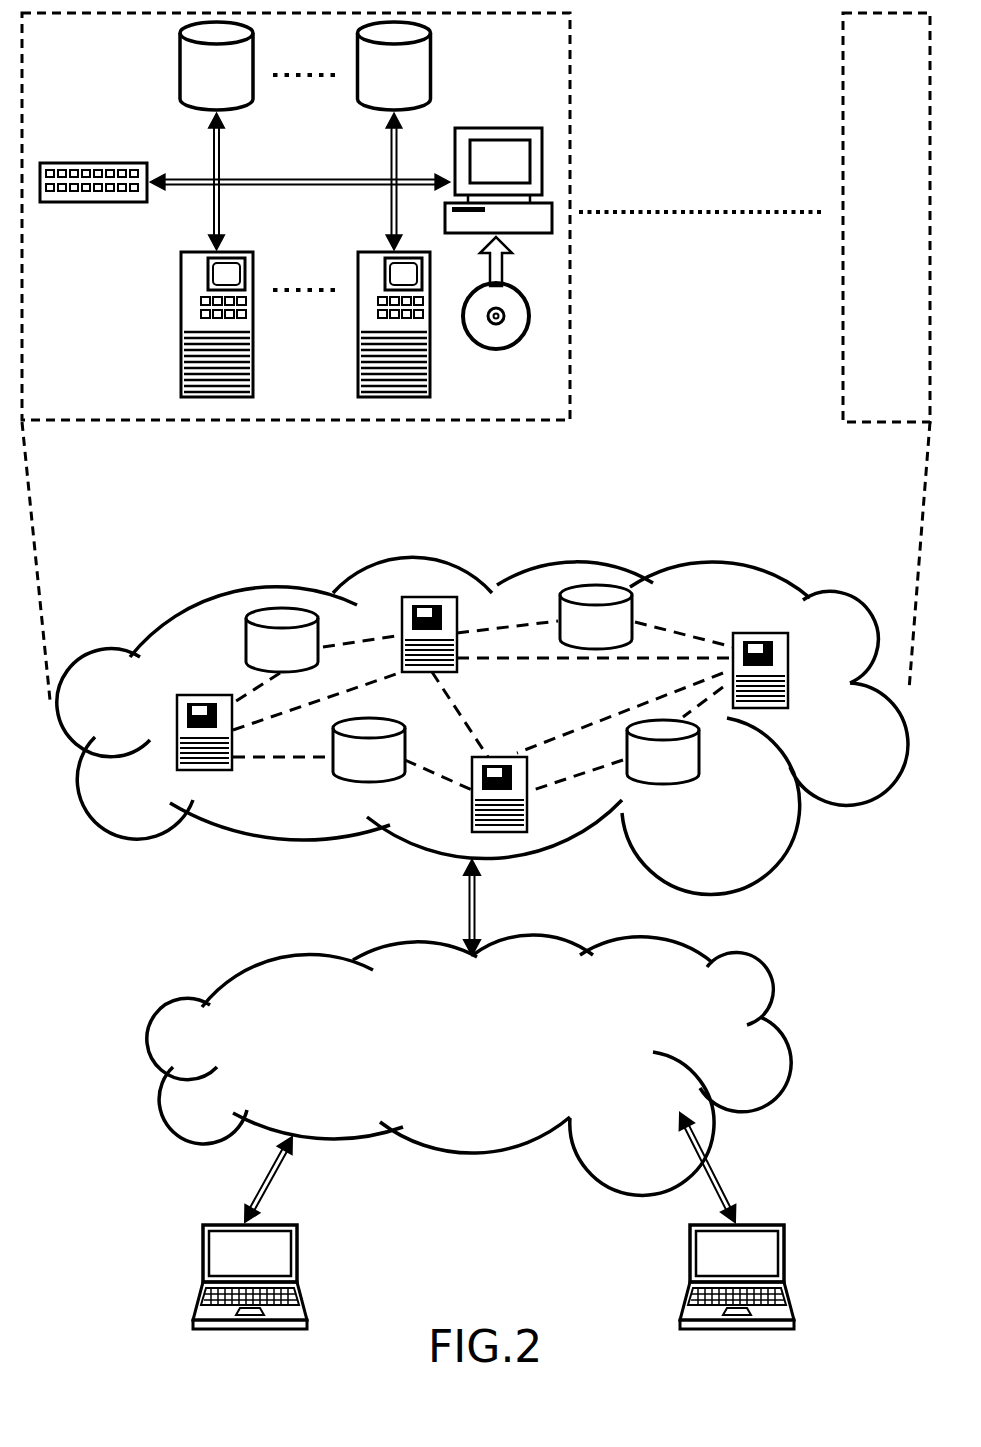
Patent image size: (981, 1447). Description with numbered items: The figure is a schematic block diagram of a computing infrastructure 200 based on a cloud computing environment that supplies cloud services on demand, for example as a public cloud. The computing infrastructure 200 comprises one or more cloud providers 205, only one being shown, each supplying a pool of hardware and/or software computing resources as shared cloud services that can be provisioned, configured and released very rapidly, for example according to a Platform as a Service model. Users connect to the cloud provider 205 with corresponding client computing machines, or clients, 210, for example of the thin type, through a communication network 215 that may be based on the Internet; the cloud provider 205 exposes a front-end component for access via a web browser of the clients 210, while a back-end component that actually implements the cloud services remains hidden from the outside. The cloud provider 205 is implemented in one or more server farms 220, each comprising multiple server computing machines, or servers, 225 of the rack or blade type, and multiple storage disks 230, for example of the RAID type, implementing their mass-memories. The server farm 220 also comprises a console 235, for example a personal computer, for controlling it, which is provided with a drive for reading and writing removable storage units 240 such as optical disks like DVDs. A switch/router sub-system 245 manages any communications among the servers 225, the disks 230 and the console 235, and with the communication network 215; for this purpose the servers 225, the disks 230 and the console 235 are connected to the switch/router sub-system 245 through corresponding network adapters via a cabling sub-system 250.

The computing infrastructure 200 is at (67, 938).
The cloud provider 205 is at (482, 714).
The client computing machine 210 is at (446, 1271).
The communication network 215 is at (469, 1044).
The server farm 220 is at (476, 356).
The server computing machine 225 is at (260, 329).
The storage disk 230 is at (258, 78).
The console 235 is at (500, 153).
The removable storage unit 240 is at (514, 320).
The switch/router sub-system 245 is at (97, 209).
The cabling sub-system 250 is at (300, 181).